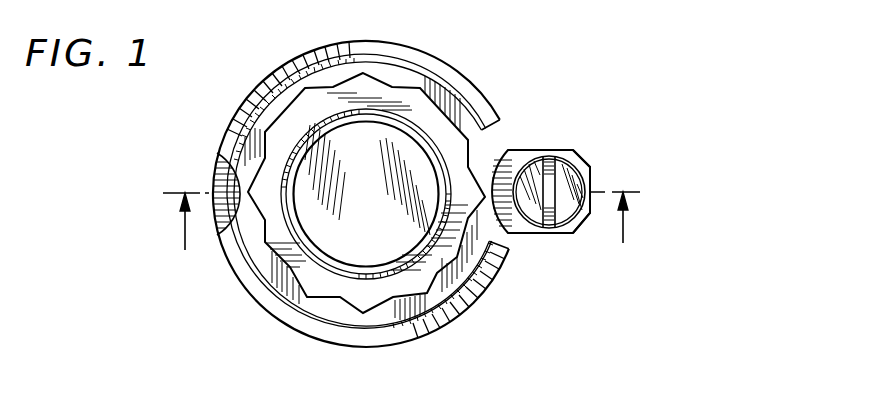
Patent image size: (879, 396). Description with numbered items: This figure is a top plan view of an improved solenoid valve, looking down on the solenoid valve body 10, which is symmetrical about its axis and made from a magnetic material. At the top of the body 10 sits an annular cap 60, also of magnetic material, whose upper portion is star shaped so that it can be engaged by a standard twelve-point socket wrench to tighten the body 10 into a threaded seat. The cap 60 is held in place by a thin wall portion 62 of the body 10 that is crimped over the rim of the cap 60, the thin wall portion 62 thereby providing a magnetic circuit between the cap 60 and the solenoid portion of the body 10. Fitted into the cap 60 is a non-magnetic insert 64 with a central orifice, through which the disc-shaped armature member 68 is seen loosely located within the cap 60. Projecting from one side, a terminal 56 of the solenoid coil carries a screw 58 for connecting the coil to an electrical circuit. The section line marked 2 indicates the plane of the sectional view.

The solenoid valve body 10 is at (426, 194).
The terminal 56 is at (523, 237).
The screw 58 is at (582, 168).
The annular cap 60 is at (497, 143).
The thin wall portion 62 is at (253, 280).
The insert 64 is at (297, 168).
The armature member 68 is at (361, 238).
The section line 2- 2 is at (401, 238).